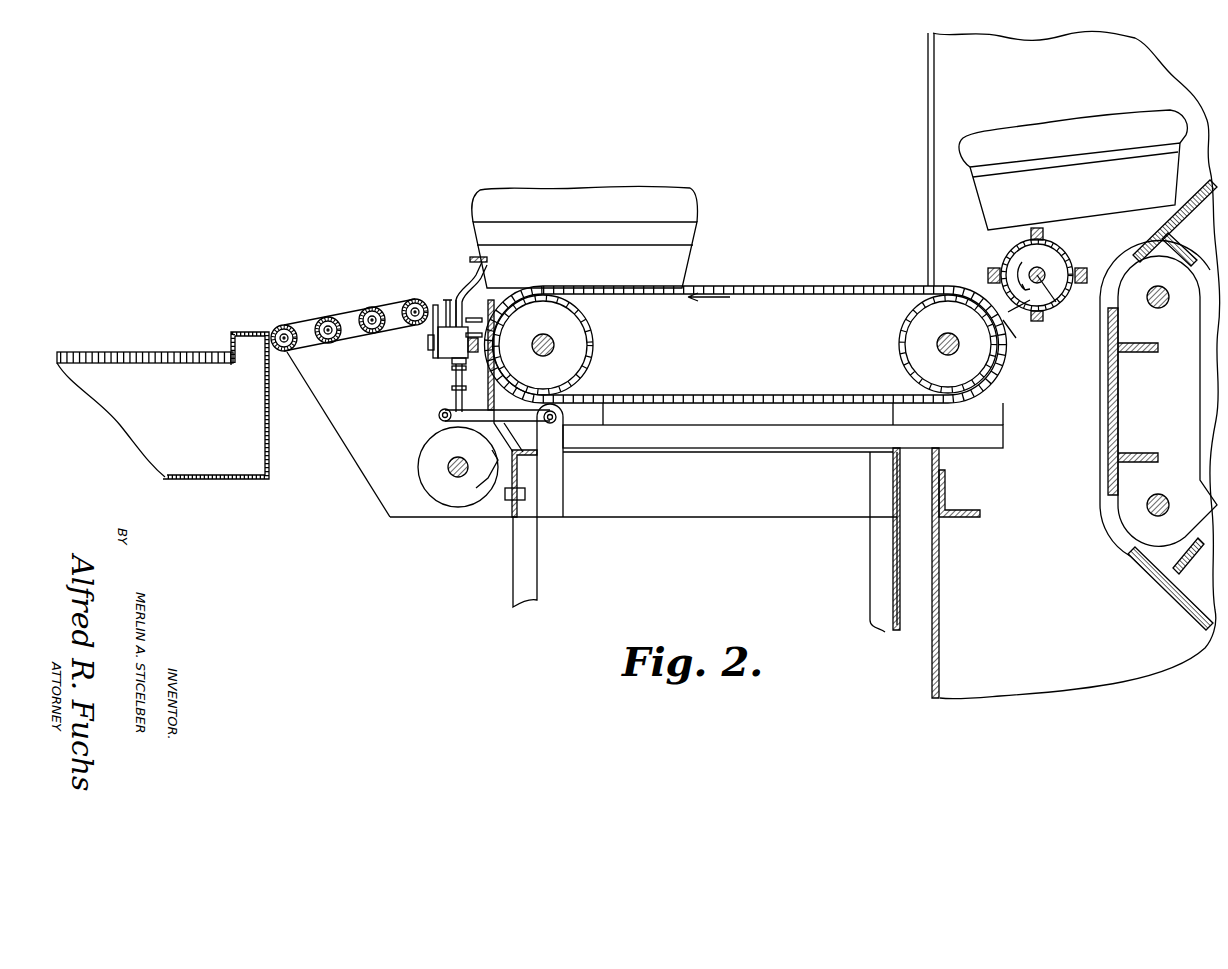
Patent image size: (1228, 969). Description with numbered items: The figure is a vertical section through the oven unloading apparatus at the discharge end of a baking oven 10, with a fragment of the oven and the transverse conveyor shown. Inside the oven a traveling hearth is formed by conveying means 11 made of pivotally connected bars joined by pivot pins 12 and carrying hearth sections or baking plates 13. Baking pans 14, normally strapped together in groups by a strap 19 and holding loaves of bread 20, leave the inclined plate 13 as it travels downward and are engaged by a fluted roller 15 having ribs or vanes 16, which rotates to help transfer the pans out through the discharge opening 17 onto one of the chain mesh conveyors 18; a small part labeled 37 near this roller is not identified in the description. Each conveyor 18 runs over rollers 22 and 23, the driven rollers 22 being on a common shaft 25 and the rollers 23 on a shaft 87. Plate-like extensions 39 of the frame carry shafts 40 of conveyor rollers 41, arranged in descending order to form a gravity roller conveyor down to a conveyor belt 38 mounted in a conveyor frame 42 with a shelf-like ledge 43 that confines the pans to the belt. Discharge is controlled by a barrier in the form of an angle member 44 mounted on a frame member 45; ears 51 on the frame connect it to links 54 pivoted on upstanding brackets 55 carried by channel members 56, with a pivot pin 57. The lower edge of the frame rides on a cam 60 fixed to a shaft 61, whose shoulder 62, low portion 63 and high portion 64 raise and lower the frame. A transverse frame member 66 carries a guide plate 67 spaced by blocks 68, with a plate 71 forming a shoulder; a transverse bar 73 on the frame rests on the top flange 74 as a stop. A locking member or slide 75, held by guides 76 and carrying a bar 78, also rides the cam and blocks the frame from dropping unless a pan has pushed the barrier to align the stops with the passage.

The baking oven 10 is at (940, 645).
The conveying means 11 is at (1140, 450).
The pivot pins 12 is at (1160, 308).
The hearth sections or baking plates 13 is at (1195, 185).
The baking pans 14 is at (690, 262).
The fluted roller 15 is at (1000, 262).
The ribs or vanes 16 is at (985, 277).
The discharge opening 17 is at (930, 205).
The conveyors 18 is at (783, 292).
The strap 19 is at (690, 240).
The loaves of bread 20 is at (690, 205).
The rollers 22 is at (597, 362).
The rollers 23 is at (900, 345).
The common shaft 25 is at (553, 340).
The roller drive link 37 is at (1045, 302).
The conveyor belt 38 is at (105, 352).
The plate-like extensions 39 is at (342, 455).
The shafts 40 is at (372, 335).
The conveyor rollers 41 is at (284, 325).
The conveyor frame 42 is at (268, 450).
The shelf-like ledge 43 is at (250, 334).
The angle members 44 is at (478, 268).
The frame members 45 is at (470, 405).
The ears 51 is at (440, 413).
The links 54 is at (555, 435).
The upstanding brackets 55 is at (560, 498).
The channel members 56 is at (525, 478).
The pivot pin 57 is at (563, 418).
The cam 60 is at (425, 470).
The shaft 61 is at (450, 475).
The shoulders 62 is at (490, 478).
The low portion 63 is at (503, 495).
The high portion 64 is at (430, 440).
The transverse frame member 66 is at (482, 350).
The plate 67 is at (438, 345).
The blocks 68 is at (445, 360).
The plate 71 is at (436, 318).
The transverse bar 73 is at (490, 320).
The top flange 74 is at (482, 334).
The locking member or slide 75 is at (455, 300).
The guides 76 is at (452, 388).
The bar 78 is at (448, 300).
The shaft 87 is at (945, 338).